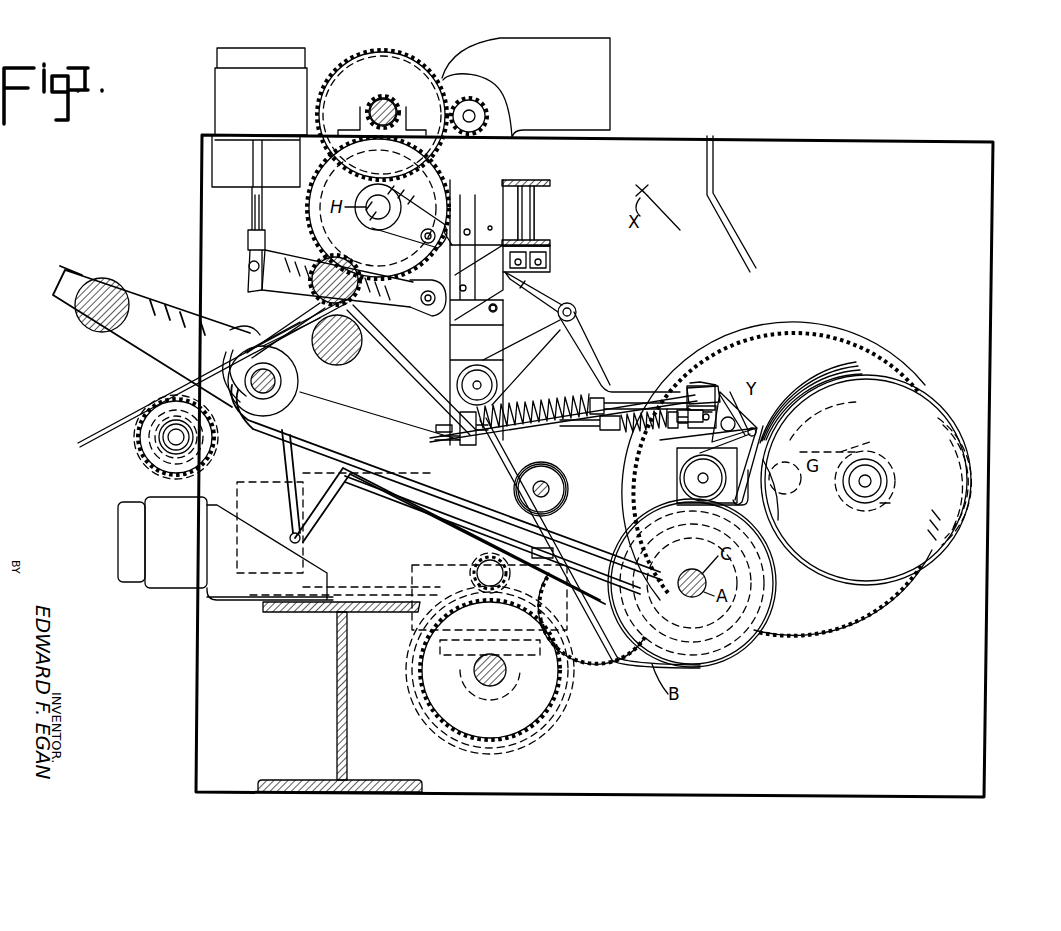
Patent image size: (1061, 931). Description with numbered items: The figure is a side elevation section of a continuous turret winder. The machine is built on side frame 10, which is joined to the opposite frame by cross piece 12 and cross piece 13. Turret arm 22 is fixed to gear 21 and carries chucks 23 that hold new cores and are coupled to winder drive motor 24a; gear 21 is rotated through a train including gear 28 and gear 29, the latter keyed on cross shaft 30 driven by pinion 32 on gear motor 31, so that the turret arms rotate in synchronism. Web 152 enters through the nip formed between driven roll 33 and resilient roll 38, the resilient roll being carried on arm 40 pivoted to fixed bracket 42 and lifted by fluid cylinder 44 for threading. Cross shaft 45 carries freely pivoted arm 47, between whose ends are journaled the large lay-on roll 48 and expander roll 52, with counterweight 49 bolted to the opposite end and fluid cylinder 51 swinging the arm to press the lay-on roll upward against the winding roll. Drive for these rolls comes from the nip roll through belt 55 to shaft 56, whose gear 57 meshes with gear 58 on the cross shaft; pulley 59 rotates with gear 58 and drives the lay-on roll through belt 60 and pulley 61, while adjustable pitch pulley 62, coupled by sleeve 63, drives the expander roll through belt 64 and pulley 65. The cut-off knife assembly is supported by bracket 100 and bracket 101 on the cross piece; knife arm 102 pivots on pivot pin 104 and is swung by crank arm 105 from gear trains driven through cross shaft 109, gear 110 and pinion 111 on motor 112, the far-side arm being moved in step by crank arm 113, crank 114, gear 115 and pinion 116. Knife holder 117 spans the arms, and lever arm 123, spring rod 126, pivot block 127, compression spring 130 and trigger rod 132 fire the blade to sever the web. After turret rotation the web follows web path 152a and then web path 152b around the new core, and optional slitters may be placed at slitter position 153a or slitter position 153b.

The side frame 10 is at (996, 204).
The cross piece 12 is at (335, 686).
The cross piece 13 is at (534, 214).
The gear 21 is at (843, 324).
The arm 22 is at (836, 450).
The chucks 23 is at (878, 468).
The winder drive motor 24a is at (878, 440).
The gear 28 is at (600, 657).
The gear 29 is at (540, 724).
The cross shaft 30 is at (482, 678).
The gear motor 31 is at (434, 538).
The pinion 32 is at (472, 576).
The roll 33 is at (357, 350).
The resilient roll 38 is at (356, 264).
The arm 40 is at (288, 257).
The fixed bracket 42 is at (412, 310).
The fluid cylinder 44 is at (228, 99).
The cross shaft 45 is at (255, 378).
The arm 47 is at (178, 308).
The lay-on roll 48 is at (722, 660).
The counterweight 49 is at (110, 284).
The fluid cylinder 51 is at (160, 590).
The expander roll 52 is at (545, 474).
The belt 55 is at (298, 326).
The shaft 56 is at (160, 440).
The gear 57 is at (148, 462).
The gear 58 is at (193, 437).
The pulley 59 is at (258, 328).
The belt 60 is at (376, 504).
The pulley 61 is at (765, 594).
The adjustable pitch pulley 62 is at (302, 392).
The sleeve 63 is at (267, 369).
The belt 64 is at (374, 464).
The pulley 65 is at (568, 480).
The bracket 100 is at (448, 350).
The bracket 101 is at (498, 309).
The knife arm 102 is at (588, 350).
The pivot pin 104 is at (486, 382).
The crank arm 105 is at (542, 296).
The cross shaft 109 is at (392, 102).
The gear 110 is at (407, 60).
The pinion 111 is at (482, 102).
The motor 112 is at (603, 82).
The crank arm 113 is at (483, 268).
The crank 114 is at (428, 228).
The gear 115 is at (312, 208).
The pinion 116 is at (374, 96).
The knife holder 117 is at (745, 470).
The lever arm 123 is at (728, 400).
The spring rod 126 is at (630, 396).
The pivot block 127 is at (461, 442).
The compression spring 130 is at (546, 404).
The trigger rod 132 is at (630, 436).
The web 152 is at (90, 440).
The web path 152a is at (775, 400).
The web path 152b is at (770, 490).
The slitter position 153a is at (590, 543).
The slitter position 153b is at (388, 372).